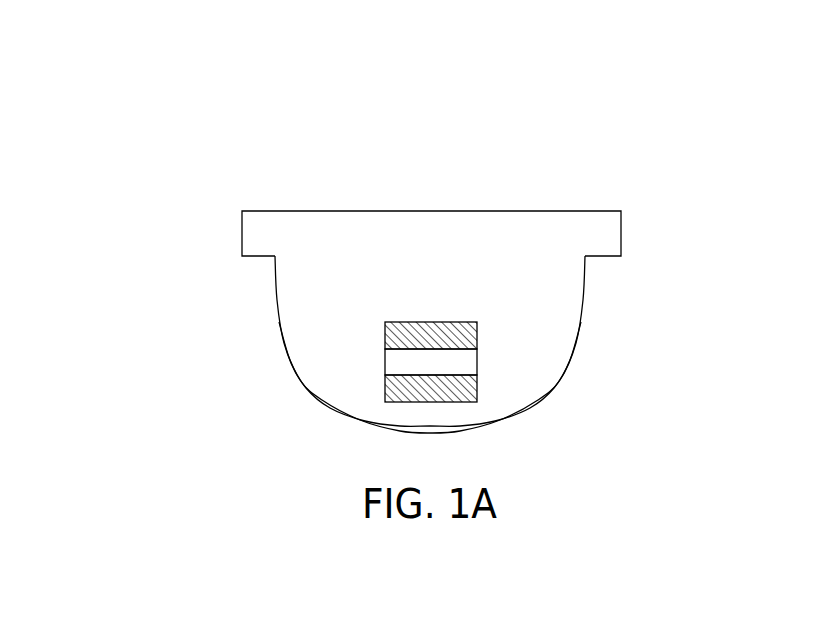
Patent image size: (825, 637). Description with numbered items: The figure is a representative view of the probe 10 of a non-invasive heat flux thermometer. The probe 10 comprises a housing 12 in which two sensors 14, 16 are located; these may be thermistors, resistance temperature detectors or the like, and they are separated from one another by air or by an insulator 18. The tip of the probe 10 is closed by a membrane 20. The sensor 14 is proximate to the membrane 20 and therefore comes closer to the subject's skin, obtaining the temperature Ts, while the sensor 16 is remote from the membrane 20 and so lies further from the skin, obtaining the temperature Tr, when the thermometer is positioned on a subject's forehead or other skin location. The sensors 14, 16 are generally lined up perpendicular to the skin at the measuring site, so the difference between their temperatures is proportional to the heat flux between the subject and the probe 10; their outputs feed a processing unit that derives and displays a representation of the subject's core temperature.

The probe 10 is at (493, 297).
The housing 12 is at (478, 211).
The sensor 14 is at (358, 404).
The sensor 16 is at (385, 333).
The insulator 18 is at (477, 363).
The membrane 20 is at (546, 400).